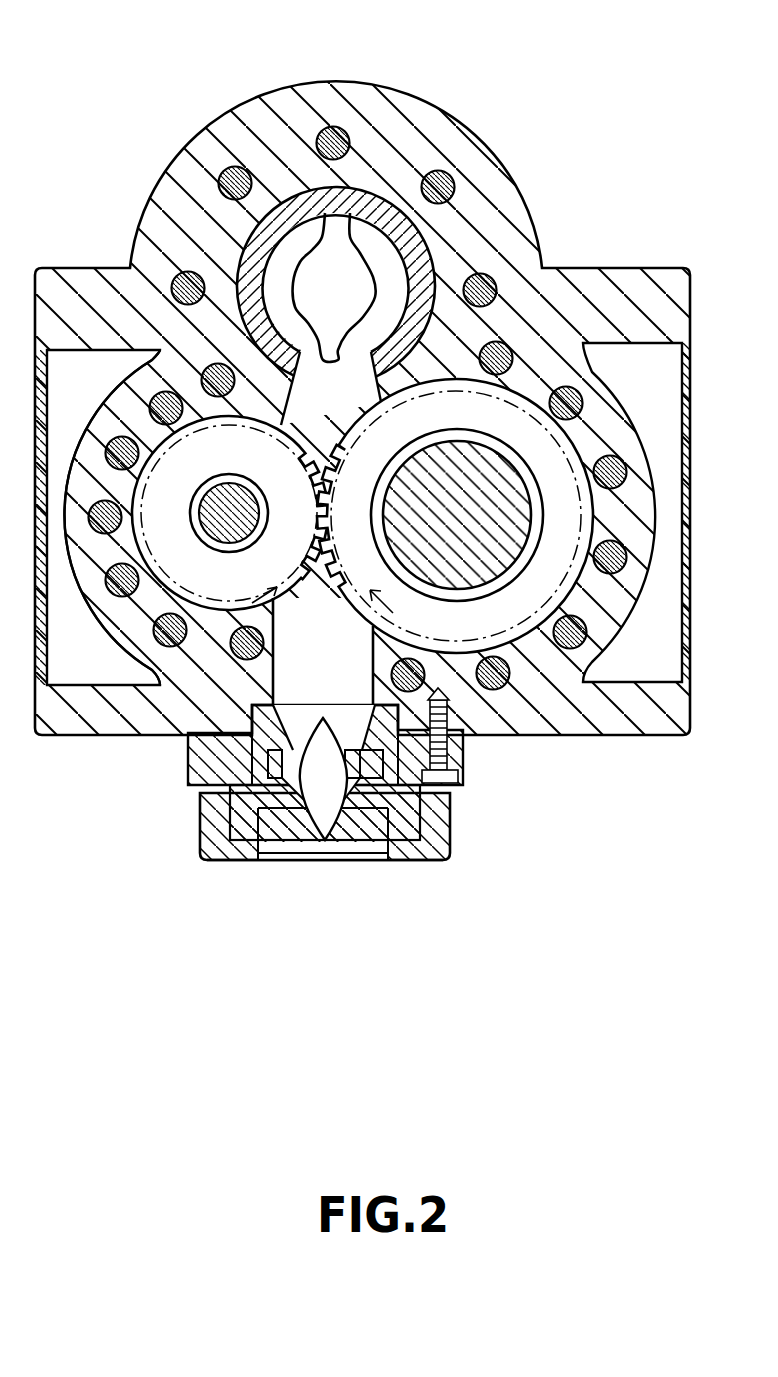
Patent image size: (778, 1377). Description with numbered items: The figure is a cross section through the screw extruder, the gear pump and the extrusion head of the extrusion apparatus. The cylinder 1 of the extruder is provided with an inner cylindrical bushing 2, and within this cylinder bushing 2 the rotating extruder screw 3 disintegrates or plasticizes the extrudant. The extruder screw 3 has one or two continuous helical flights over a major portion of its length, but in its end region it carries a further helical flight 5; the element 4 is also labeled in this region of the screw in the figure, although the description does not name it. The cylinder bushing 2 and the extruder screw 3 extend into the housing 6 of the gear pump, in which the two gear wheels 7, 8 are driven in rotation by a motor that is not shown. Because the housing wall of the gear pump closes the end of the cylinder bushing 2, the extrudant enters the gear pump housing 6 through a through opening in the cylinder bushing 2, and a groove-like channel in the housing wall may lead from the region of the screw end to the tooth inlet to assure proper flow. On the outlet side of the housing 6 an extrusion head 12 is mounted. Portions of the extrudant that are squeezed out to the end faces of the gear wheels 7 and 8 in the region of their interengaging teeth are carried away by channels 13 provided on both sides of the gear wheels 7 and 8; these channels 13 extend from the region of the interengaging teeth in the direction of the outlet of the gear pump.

The cylinder 1 is at (182, 213).
The cylinder bushing 2 is at (288, 213).
The extruder screw 3 is at (360, 283).
The rotor bore 4 is at (337, 225).
The further helical flight 5 is at (426, 238).
The housing 6 is at (130, 630).
The gear wheel 7 is at (507, 603).
The gear wheel 8 is at (215, 582).
The extrusion head 12 is at (243, 797).
The channels 13 is at (333, 600).